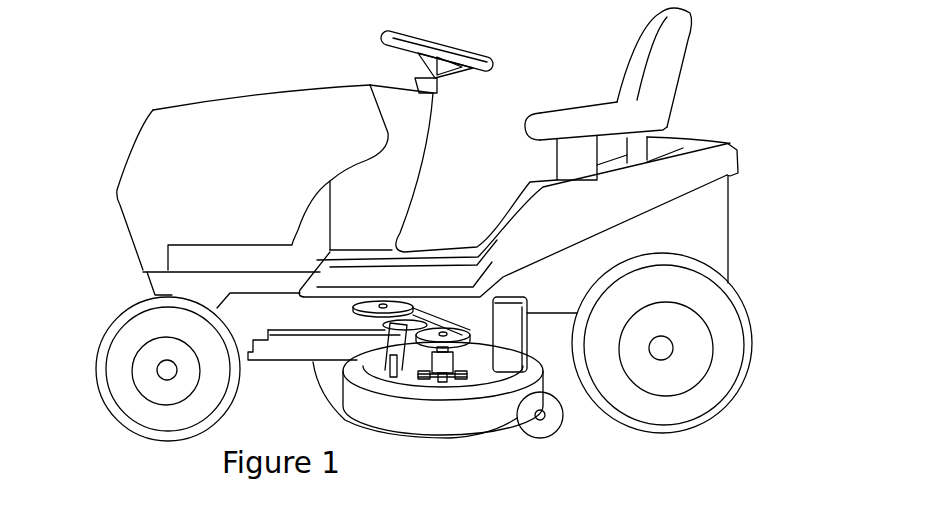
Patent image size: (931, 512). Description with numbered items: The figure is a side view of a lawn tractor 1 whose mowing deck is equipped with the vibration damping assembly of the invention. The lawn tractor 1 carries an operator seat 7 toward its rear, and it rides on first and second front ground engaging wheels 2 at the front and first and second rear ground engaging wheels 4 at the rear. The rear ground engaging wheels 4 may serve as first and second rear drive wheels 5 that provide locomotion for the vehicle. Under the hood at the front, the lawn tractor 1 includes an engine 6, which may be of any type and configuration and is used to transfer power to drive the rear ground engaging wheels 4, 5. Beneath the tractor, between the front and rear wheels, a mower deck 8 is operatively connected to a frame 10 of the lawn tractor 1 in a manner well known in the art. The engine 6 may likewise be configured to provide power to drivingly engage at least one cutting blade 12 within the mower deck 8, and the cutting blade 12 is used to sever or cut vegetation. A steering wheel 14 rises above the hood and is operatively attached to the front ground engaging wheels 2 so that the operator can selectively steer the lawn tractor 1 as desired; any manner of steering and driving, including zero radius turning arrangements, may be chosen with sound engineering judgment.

The lawn tractor 1 is at (553, 50).
The front ground engaging wheels 2 is at (118, 403).
The rear ground engaging wheels 4 is at (700, 400).
The rear drive wheels 5 is at (748, 390).
The engine 6 is at (228, 97).
The operator seat 7 is at (693, 57).
The mower deck 8 is at (478, 418).
The frame 10 is at (283, 375).
The cutting blade 12 is at (442, 445).
The steering wheel 14 is at (410, 32).